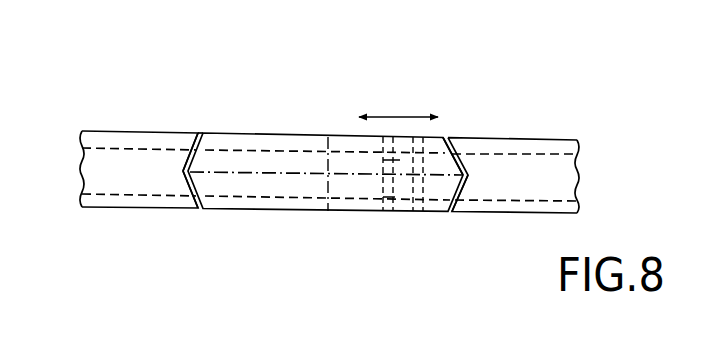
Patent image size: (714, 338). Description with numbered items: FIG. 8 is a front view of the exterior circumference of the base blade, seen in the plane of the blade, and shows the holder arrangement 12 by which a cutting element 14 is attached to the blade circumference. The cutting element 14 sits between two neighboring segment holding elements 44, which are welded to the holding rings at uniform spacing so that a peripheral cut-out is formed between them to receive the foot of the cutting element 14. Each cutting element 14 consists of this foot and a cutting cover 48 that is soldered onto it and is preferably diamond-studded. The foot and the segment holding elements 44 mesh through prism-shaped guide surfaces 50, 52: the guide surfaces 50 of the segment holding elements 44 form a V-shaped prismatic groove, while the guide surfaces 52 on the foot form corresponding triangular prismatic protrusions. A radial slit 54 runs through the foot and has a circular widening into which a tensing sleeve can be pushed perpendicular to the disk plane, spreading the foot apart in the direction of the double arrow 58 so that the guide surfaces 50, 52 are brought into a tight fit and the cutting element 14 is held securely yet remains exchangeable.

The holder arrangement 12 is at (207, 126).
The cutting element 14 is at (293, 131).
The segment holding element 44 is at (113, 188).
The cutting cover 48 is at (356, 204).
The guide surface 50 is at (196, 204).
The guide surface 52 is at (190, 172).
The radial slit 54 is at (396, 184).
The double arrow 58 is at (399, 114).